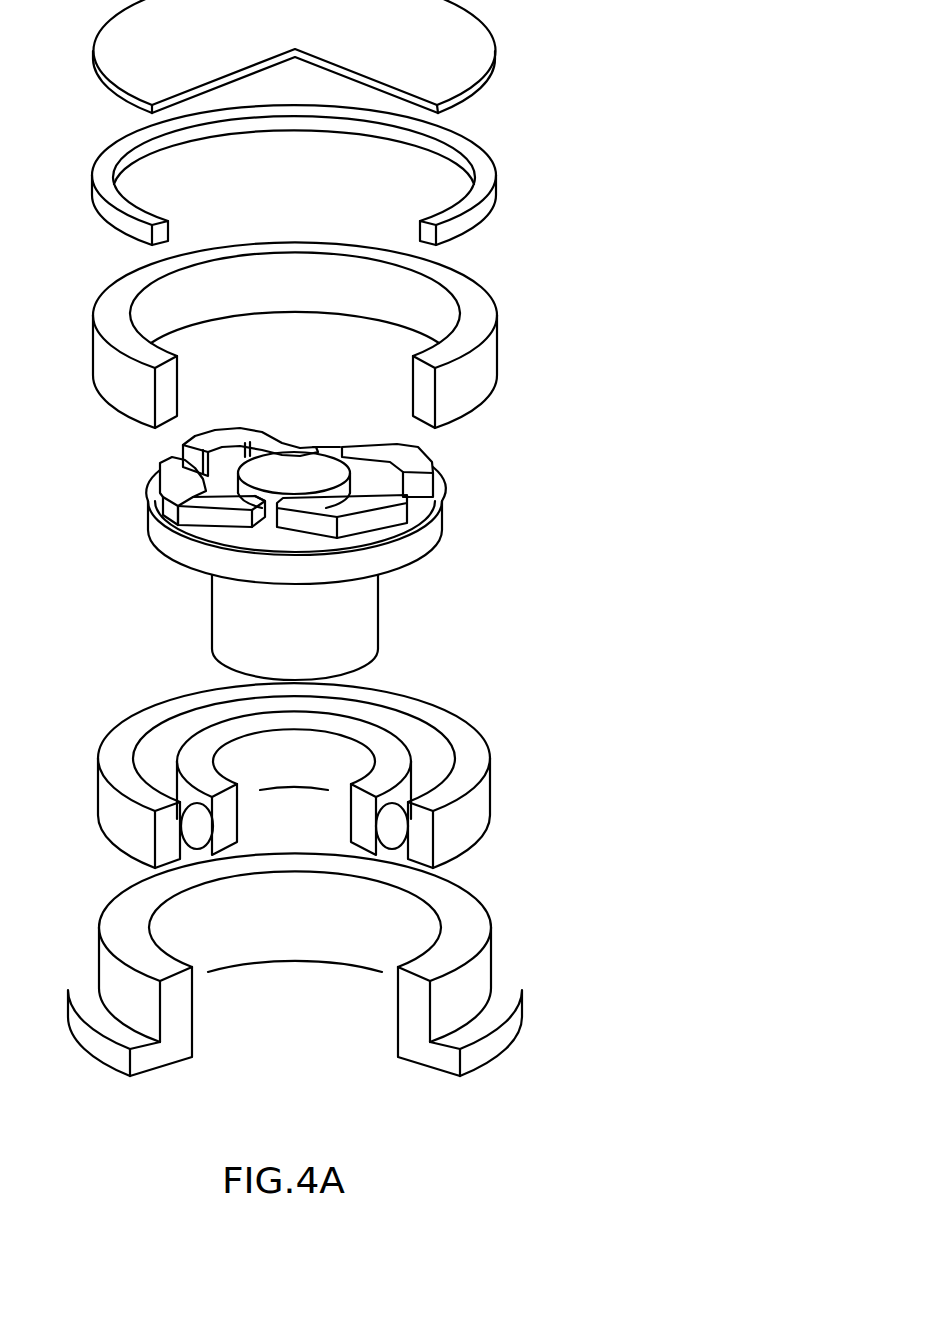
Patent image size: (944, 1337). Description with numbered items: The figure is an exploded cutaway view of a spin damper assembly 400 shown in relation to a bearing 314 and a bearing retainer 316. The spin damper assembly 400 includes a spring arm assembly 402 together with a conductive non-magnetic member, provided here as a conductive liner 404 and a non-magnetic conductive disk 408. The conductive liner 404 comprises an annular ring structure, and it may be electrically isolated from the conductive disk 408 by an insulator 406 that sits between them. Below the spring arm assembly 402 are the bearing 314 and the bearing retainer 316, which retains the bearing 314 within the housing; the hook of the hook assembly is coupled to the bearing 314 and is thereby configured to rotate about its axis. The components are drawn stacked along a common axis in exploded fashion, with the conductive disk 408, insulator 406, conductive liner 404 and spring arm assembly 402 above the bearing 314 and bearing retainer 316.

The spin damper assembly 400 is at (652, 184).
The spring arm assembly 402 is at (482, 492).
The conductive liner 404 is at (497, 340).
The insulator 406 is at (496, 188).
The conductive disk 408 is at (495, 63).
The bearing 314 is at (490, 792).
The bearing retainer 316 is at (491, 928).